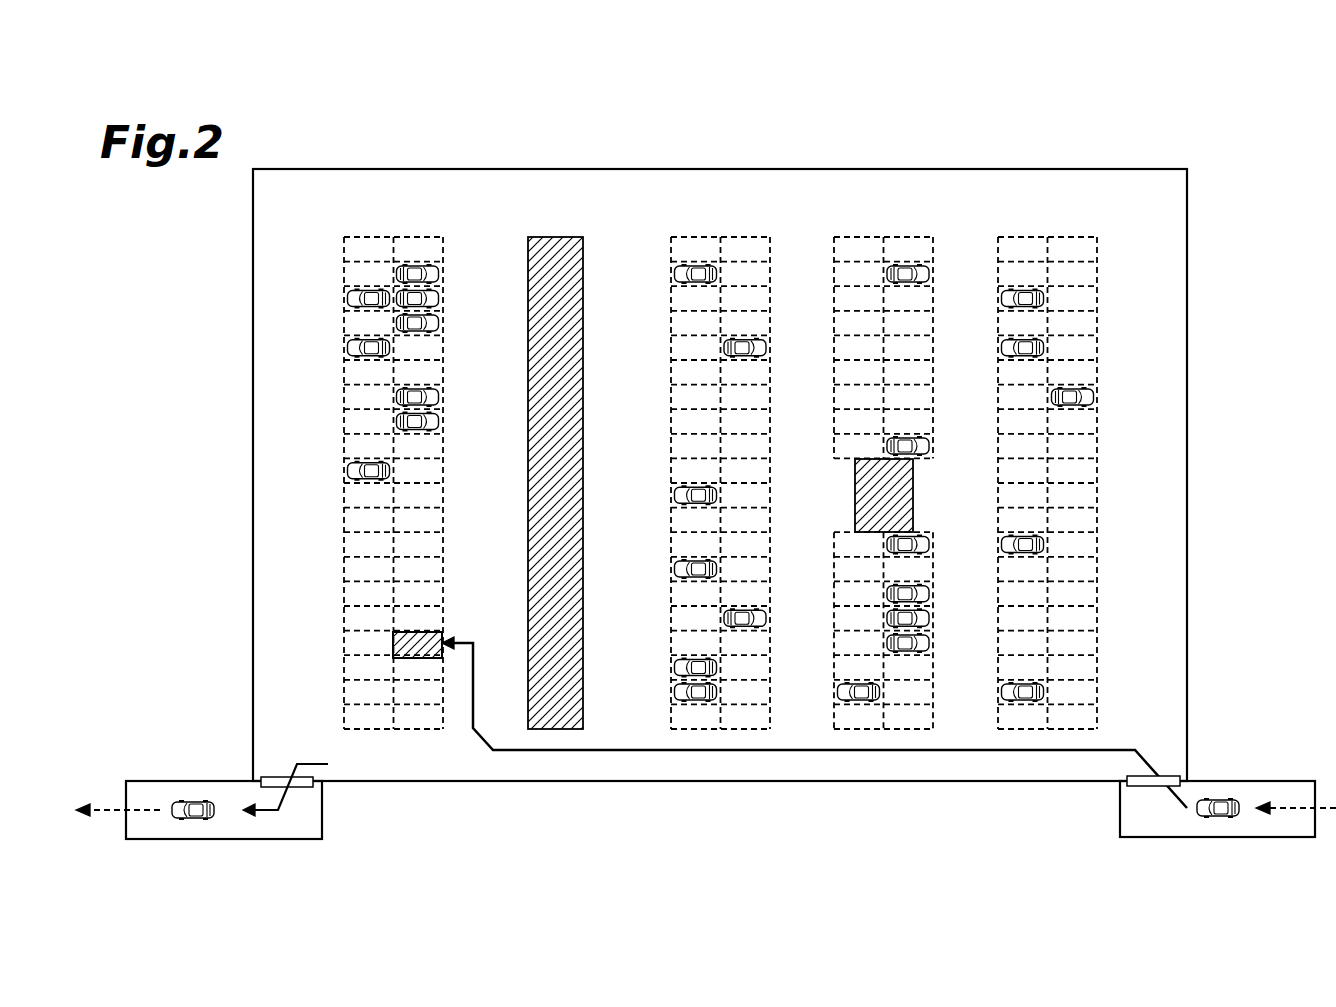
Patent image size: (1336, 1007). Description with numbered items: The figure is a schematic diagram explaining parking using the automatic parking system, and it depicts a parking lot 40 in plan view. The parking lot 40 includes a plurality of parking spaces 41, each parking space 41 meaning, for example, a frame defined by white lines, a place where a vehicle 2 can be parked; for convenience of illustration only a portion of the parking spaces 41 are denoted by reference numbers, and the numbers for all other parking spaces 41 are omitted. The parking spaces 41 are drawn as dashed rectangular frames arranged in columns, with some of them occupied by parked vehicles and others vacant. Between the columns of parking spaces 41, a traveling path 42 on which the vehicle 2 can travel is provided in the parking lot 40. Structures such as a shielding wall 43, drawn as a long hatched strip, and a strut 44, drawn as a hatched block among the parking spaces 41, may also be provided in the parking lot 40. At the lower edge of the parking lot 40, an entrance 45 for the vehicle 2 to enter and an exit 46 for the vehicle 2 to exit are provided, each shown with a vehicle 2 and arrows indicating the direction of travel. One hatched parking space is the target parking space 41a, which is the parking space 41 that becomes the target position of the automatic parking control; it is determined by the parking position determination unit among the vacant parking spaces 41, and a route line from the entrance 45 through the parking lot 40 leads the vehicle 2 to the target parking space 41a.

The vehicle 2 is at (200, 820).
The parking lot 40 is at (1187, 205).
The parking space 41 is at (1087, 243).
The target parking space 41a is at (407, 652).
The traveling path 42 is at (942, 212).
The shielding wall 43 is at (574, 237).
The strut 44 is at (913, 490).
The entrance 45 is at (1157, 838).
The exit 46 is at (290, 840).